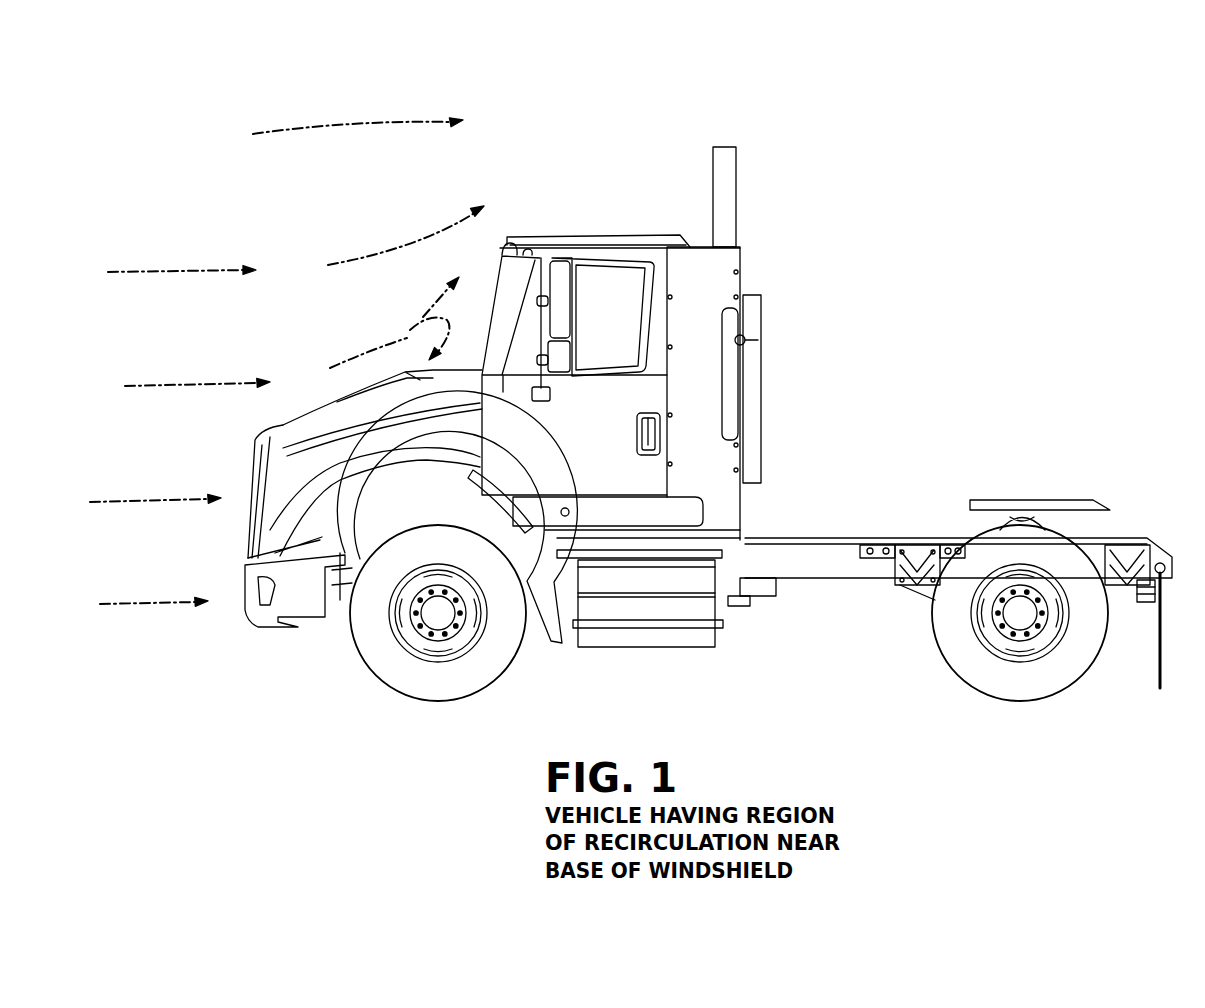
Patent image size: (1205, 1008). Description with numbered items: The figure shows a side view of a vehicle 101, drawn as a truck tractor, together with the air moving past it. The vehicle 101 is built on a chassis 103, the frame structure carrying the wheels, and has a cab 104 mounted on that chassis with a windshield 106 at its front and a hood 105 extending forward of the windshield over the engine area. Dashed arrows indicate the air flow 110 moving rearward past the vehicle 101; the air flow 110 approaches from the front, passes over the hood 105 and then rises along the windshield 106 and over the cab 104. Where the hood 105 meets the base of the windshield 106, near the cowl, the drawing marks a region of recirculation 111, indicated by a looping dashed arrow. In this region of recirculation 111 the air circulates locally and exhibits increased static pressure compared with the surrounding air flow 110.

The vehicle 101 is at (597, 232).
The chassis 103 is at (896, 530).
The cab 104 is at (646, 232).
The hood 105 is at (276, 413).
The windshield 106 is at (478, 286).
The air flow 110 is at (210, 265).
The region of recirculation 111 is at (404, 333).